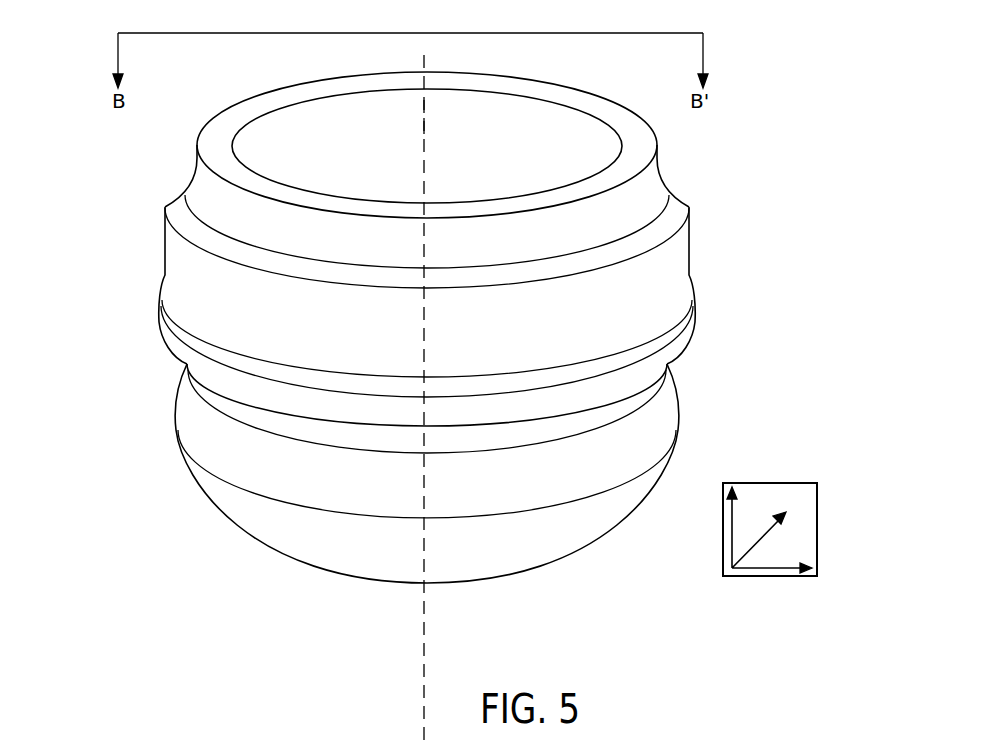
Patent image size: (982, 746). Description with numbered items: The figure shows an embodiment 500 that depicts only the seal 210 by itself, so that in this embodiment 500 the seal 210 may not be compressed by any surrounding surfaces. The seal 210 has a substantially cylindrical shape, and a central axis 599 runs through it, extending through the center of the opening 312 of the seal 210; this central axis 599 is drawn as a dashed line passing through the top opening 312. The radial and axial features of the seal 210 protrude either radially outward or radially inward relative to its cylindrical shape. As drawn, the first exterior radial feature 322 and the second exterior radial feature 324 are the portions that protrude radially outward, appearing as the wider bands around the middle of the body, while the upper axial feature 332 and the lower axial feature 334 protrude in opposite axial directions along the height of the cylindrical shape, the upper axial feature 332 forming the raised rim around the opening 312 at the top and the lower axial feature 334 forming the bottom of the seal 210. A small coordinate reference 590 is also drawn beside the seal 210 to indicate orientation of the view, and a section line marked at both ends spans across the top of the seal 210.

The embodiment 500 is at (736, 36).
The seal 210 is at (192, 522).
The opening 312 is at (565, 153).
The first exterior radial feature 322 is at (160, 297).
The second exterior radial feature 324 is at (177, 412).
The upper axial feature 332 is at (243, 102).
The lower axial feature 334 is at (330, 572).
The coordinate system 590 is at (817, 502).
The central axis 599 is at (423, 120).